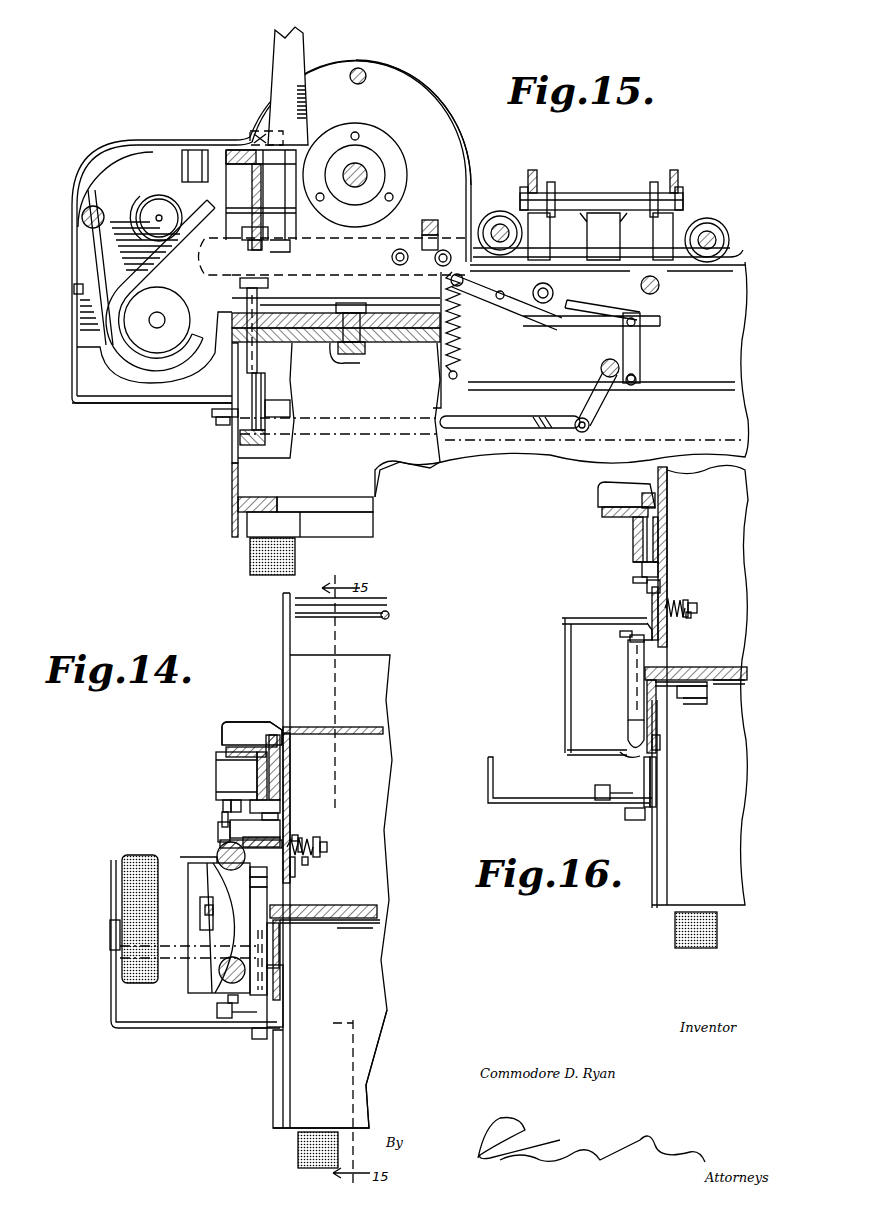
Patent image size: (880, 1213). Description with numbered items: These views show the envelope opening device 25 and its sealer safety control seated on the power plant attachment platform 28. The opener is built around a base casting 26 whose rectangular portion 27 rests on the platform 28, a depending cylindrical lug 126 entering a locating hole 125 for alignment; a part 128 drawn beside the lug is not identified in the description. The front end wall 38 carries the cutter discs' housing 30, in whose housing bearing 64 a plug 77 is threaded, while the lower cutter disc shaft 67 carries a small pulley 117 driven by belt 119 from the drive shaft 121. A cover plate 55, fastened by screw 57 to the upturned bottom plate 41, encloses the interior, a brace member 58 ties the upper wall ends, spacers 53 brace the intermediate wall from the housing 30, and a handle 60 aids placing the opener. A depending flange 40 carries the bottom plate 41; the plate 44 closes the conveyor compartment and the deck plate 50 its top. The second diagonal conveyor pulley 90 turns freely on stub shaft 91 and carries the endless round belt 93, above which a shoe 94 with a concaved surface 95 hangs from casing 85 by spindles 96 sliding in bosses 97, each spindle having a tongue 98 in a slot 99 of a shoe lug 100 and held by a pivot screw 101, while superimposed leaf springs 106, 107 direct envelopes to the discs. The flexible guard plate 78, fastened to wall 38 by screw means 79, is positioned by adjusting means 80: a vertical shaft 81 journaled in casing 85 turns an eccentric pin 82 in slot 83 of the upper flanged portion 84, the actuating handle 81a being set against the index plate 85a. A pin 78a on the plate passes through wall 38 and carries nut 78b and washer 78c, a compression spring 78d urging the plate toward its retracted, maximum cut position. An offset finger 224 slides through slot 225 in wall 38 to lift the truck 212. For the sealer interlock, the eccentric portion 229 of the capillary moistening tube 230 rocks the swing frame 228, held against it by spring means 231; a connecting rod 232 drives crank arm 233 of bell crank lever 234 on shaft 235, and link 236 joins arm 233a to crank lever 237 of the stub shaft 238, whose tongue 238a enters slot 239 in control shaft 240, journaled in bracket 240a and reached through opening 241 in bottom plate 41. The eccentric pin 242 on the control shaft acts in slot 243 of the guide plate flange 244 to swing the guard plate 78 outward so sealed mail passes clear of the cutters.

In FIG. 15, the envelope opening device 25 is at (100, 152).
In FIG. 15, the cutter discs' housing 30 is at (132, 150).
In FIG. 15, the cover plate 55 is at (432, 90).
In FIG. 14, the cover plate 55 is at (378, 730).
In FIG. 15, the actuating handle 81a is at (252, 135).
In FIG. 14, the actuating handle 81a is at (235, 728).
In FIG. 16, the actuating handle 81a is at (600, 495).
In FIG. 15, the brace member 58 is at (360, 68).
In FIG. 15, the drive shaft 121 is at (366, 168).
In FIG. 15, the housing bearing 64 is at (140, 203).
In FIG. 15, the plug 77 is at (157, 200).
In FIG. 15, the spacers 53 is at (82, 217).
In FIG. 15, the screw 57 is at (74, 290).
In FIG. 15, the belt 119 is at (146, 276).
In FIG. 15, the small pulley 117 is at (172, 310).
In FIG. 15, the lower cutter disc shaft 67 is at (157, 330).
In FIG. 15, the bottom plate 41 is at (110, 403).
In FIG. 14, the bottom plate 41 is at (200, 995).
In FIG. 16, the bottom plate 41 is at (600, 757).
In FIG. 15, the index plate 85a is at (250, 166).
In FIG. 14, the index plate 85a is at (225, 748).
In FIG. 16, the index plate 85a is at (605, 510).
In FIG. 15, the vertical shaft 81 is at (268, 200).
In FIG. 14, the vertical shaft 81 is at (280, 768).
In FIG. 16, the vertical shaft 81 is at (657, 540).
In FIG. 15, the upper flanged portion 84 is at (272, 234).
In FIG. 14, the upper flanged portion 84 is at (283, 800).
In FIG. 16, the upper flanged portion 84 is at (633, 580).
In FIG. 15, the guard plate 78 is at (292, 252).
In FIG. 14, the guard plate 78 is at (292, 843).
In FIG. 16, the guard plate 78 is at (662, 600).
In FIG. 15, the offset finger 224 is at (431, 218).
In FIG. 15, the slot 225 is at (437, 238).
In FIG. 15, the screw means 79 is at (437, 262).
In FIG. 15, the base casting 26 is at (392, 313).
In FIG. 14, the base casting 26 is at (352, 899).
In FIG. 16, the base casting 26 is at (743, 665).
In FIG. 15, the rectangular portion 27 is at (410, 342).
In FIG. 14, the rectangular portion 27 is at (375, 905).
In FIG. 16, the rectangular portion 27 is at (720, 665).
In FIG. 15, the locating holes 125 is at (362, 340).
In FIG. 15, the depending cylindrical lug 126 is at (362, 356).
In FIG. 16, the depending cylindrical lug 126 is at (708, 693).
In FIG. 15, the clip 128 is at (338, 362).
In FIG. 15, the power plant attachment platform 28 is at (322, 343).
In FIG. 14, the power plant attachment platform 28 is at (363, 927).
In FIG. 16, the power plant attachment platform 28 is at (733, 710).
In FIG. 15, the guide plate flange 244 is at (262, 288).
In FIG. 16, the guide plate flange 244 is at (630, 640).
In FIG. 15, the control shaft 240 is at (264, 308).
In FIG. 14, the control shaft 240 is at (298, 975).
In FIG. 16, the control shaft 240 is at (628, 732).
In FIG. 15, the tongue 238a is at (268, 388).
In FIG. 14, the tongue 238a is at (282, 984).
In FIG. 16, the tongue 238a is at (655, 762).
In FIG. 15, the stub shaft 238 is at (290, 410).
In FIG. 14, the stub shaft 238 is at (283, 1003).
In FIG. 16, the stub shaft 238 is at (652, 780).
In FIG. 15, the arm 233a is at (212, 413).
In FIG. 15, the crank lever 237 is at (240, 440).
In FIG. 14, the crank lever 237 is at (238, 1015).
In FIG. 16, the crank lever 237 is at (618, 790).
In FIG. 15, the truck 212 is at (622, 260).
In FIG. 15, the capillary moistening tube 230 is at (553, 287).
In FIG. 15, the eccentric portion 229 is at (556, 295).
In FIG. 15, the spring means 231 is at (458, 340).
In FIG. 15, the swing frame 228 is at (585, 325).
In FIG. 15, the connecting rod 232 is at (640, 345).
In FIG. 15, the shaft 235 is at (600, 370).
In FIG. 14, the shaft 235 is at (170, 945).
In FIG. 15, the crank arm 233 is at (620, 382).
In FIG. 15, the bell crank lever 234 is at (592, 412).
In FIG. 14, the bell crank lever 234 is at (228, 1000).
In FIG. 15, the link 236 is at (518, 420).
In FIG. 14, the handle 60 is at (372, 627).
In FIG. 14, the front end wall 38 is at (292, 748).
In FIG. 16, the front end wall 38 is at (670, 488).
In FIG. 14, the adjusting means 80 is at (270, 711).
In FIG. 14, the bosses 97 is at (218, 765).
In FIG. 14, the casing 85 is at (218, 783).
In FIG. 14, the shoe lugs 100 is at (246, 800).
In FIG. 14, the eccentric pin 82 is at (283, 813).
In FIG. 16, the eccentric pin 82 is at (660, 578).
In FIG. 14, the tongue 98 is at (223, 805).
In FIG. 14, the spindles 96 is at (233, 805).
In FIG. 14, the pivot screws 101 is at (222, 812).
In FIG. 14, the shoe 94 is at (220, 832).
In FIG. 14, the concaved surface 95 is at (222, 842).
In FIG. 14, the slots 99 is at (272, 828).
In FIG. 14, the leaf spring 106 is at (295, 840).
In FIG. 14, the leaf spring 107 is at (300, 845).
In FIG. 14, the pin 78a is at (322, 846).
In FIG. 16, the pin 78a is at (695, 605).
In FIG. 14, the nut 78b is at (327, 850).
In FIG. 16, the nut 78b is at (698, 612).
In FIG. 14, the washer 78c is at (308, 862).
In FIG. 16, the washer 78c is at (690, 620).
In FIG. 14, the compression spring 78d is at (294, 870).
In FIG. 16, the compression spring 78d is at (662, 625).
In FIG. 14, the deck plate 50 is at (200, 860).
In FIG. 16, the deck plate 50 is at (570, 625).
In FIG. 14, the endless round belt 93 is at (220, 857).
In FIG. 14, the plate 44 is at (188, 978).
In FIG. 14, the second diagonal conveyor pulley 90 is at (222, 878).
In FIG. 14, the stub shaft 91 is at (203, 912).
In FIG. 14, the eccentric pin 242 is at (252, 872).
In FIG. 16, the eccentric pin 242 is at (620, 634).
In FIG. 14, the slot 243 is at (252, 886).
In FIG. 16, the slot 243 is at (650, 640).
In FIG. 14, the depending flange 40 is at (280, 940).
In FIG. 16, the depending flange 40 is at (660, 725).
In FIG. 14, the bracket 240a is at (270, 945).
In FIG. 16, the bracket 240a is at (628, 690).
In FIG. 16, the slot 83 is at (647, 588).
In FIG. 16, the slot 239 is at (660, 745).
In FIG. 16, the opening 241 is at (620, 757).